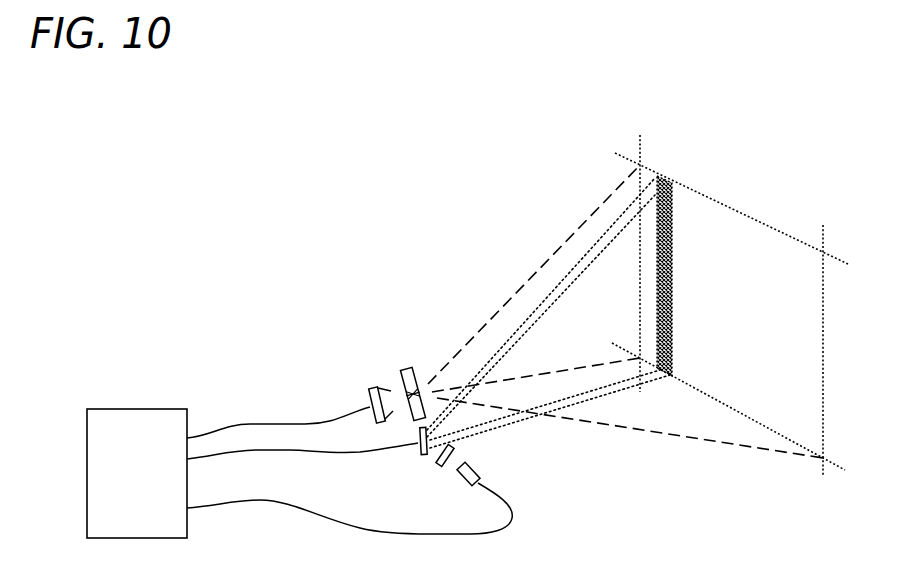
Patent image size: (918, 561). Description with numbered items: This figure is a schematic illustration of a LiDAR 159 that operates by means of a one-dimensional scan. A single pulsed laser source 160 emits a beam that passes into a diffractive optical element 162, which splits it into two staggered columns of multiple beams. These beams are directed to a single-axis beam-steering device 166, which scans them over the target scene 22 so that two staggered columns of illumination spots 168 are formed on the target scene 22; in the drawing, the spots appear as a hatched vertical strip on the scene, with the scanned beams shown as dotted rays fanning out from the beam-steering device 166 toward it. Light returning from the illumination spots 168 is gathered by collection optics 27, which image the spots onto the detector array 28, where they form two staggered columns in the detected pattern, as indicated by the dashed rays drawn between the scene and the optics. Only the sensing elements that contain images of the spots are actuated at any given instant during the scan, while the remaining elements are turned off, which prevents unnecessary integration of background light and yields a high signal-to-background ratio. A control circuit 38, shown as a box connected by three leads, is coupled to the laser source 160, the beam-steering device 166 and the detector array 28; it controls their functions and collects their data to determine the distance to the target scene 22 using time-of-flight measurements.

The LiDAR 159 is at (233, 183).
The control circuit 38 is at (153, 494).
The detector array 28 is at (372, 386).
The collection optics 27 is at (406, 368).
The single-axis beam-steering device 166 is at (421, 457).
The diffractive optical element 162 is at (443, 466).
The pulsed laser source 160 is at (483, 469).
The target scene 22 is at (808, 384).
The illumination spots 168 is at (672, 212).